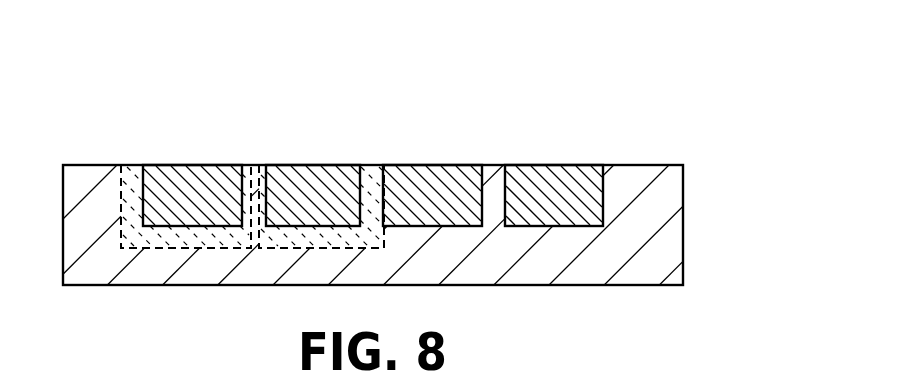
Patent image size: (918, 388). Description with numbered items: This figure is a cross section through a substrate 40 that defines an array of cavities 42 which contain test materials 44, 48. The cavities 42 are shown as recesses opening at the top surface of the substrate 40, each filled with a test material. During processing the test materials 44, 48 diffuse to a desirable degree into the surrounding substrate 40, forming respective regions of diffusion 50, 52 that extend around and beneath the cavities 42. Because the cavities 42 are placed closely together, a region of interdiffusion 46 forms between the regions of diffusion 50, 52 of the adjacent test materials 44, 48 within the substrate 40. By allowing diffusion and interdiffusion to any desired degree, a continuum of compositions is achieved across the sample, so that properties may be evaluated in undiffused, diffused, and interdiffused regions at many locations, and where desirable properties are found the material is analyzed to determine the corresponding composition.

The substrate 40 is at (683, 237).
The cavities 42 is at (603, 190).
The test material 44 is at (183, 165).
The regions of interdiffusion 46 is at (253, 165).
The test material 48 is at (328, 165).
The region of diffusion 50 is at (133, 165).
The region of diffusion 52 is at (375, 165).